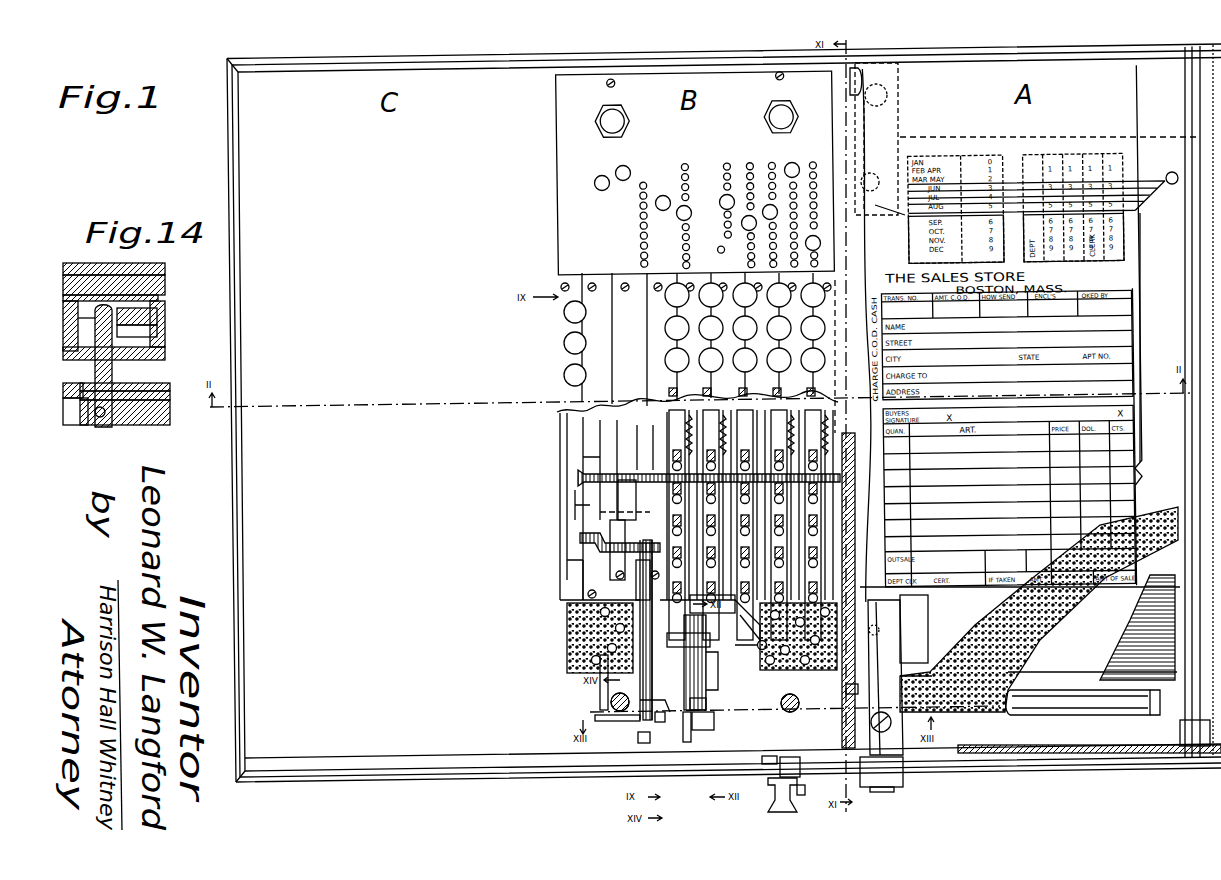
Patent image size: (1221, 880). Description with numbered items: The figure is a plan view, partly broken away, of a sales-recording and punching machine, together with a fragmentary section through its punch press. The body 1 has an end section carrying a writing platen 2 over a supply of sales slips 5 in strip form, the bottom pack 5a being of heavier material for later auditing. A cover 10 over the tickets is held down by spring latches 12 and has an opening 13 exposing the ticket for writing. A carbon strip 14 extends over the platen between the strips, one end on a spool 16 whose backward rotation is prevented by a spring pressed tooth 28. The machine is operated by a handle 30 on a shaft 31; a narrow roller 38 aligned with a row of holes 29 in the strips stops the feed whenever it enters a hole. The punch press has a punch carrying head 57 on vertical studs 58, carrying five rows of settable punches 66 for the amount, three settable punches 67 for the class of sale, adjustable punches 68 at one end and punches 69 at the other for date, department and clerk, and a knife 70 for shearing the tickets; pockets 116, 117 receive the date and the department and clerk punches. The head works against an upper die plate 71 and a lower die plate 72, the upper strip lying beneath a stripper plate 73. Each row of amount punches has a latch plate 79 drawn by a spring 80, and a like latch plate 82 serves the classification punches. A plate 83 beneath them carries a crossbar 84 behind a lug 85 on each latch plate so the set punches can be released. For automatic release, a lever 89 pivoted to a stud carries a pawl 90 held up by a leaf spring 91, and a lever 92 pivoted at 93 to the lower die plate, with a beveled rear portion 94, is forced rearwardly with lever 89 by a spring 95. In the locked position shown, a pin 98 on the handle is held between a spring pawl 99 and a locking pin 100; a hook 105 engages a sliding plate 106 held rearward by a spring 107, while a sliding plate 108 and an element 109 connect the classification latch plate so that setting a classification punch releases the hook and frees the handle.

In FIG. 1, the body 1 is at (227, 110).
In FIG. 1, the writing platen 2 is at (1152, 620).
In FIG. 1, the sales slips 5 is at (974, 606).
In FIG. 1, the bottom pack 5a is at (1090, 646).
In FIG. 1, the cover 10 is at (1152, 94).
In FIG. 1, the spring latches 12 is at (882, 80).
In FIG. 1, the opening 13 is at (1140, 262).
In FIG. 1, the carbon strip 14 is at (1065, 602).
In FIG. 1, the spool 16 is at (1040, 715).
In FIG. 1, the spring pressed tooth 28 is at (868, 685).
In FIG. 1, the holes 29 is at (1170, 172).
In FIG. 1, the handle 30 is at (775, 805).
In FIG. 1, the shaft 31 is at (890, 792).
In FIG. 1, the narrow roller 38 is at (862, 165).
In FIG. 1, the punch carrying head 57 is at (557, 181).
In FIG. 14, the punch carrying head 57 is at (80, 263).
In FIG. 1, the vertical studs 58 is at (611, 708).
In FIG. 1, the settable punches 66 is at (800, 374).
In FIG. 1, the settable punches 67 is at (564, 372).
In FIG. 1, the adjustable punches 68 is at (655, 205).
In FIG. 1, the punches 69 is at (612, 648).
In FIG. 1, the knife 70 is at (846, 690).
In FIG. 14, the upper die plate 71 is at (170, 396).
In FIG. 14, the lower die plate 72 is at (166, 420).
In FIG. 14, the stripper plate 73 is at (168, 384).
In FIG. 1, the latch plate 79 is at (668, 406).
In FIG. 1, the spring 80 is at (690, 414).
In FIG. 1, the latch plate 82 is at (575, 502).
In FIG. 1, the plate 83 is at (706, 650).
In FIG. 1, the crossbar 84 is at (628, 500).
In FIG. 1, the lug 85 is at (580, 480).
In FIG. 1, the lever 89 is at (688, 742).
In FIG. 14, the lever 89 is at (157, 333).
In FIG. 1, the pawl 90 is at (714, 722).
In FIG. 1, the leaf spring 91 is at (706, 704).
In FIG. 1, the lever 92 is at (652, 720).
In FIG. 14, the lever 92 is at (112, 372).
In FIG. 14, the pivot 93 is at (106, 418).
In FIG. 14, the beveled rear portion 94 is at (88, 350).
In FIG. 1, the spring 95 is at (600, 688).
In FIG. 14, the spring 95 is at (157, 314).
In FIG. 1, the pin 98 is at (786, 760).
In FIG. 1, the spring pawl 99 is at (768, 764).
In FIG. 1, the locking pin 100 is at (801, 790).
In FIG. 1, the hook 105 is at (643, 743).
In FIG. 1, the sliding plate 106 is at (655, 722).
In FIG. 1, the spring 107 is at (640, 724).
In FIG. 1, the sliding plate 108 is at (590, 546).
In FIG. 1, the element 109 is at (718, 675).
In FIG. 1, the pocket 116 is at (567, 655).
In FIG. 1, the pocket 117 is at (770, 670).